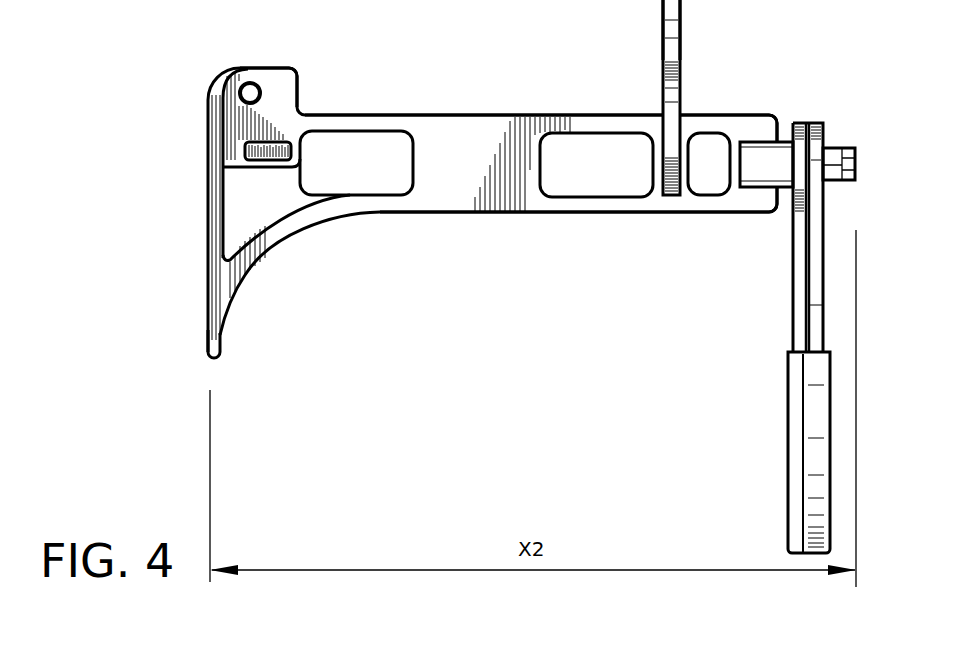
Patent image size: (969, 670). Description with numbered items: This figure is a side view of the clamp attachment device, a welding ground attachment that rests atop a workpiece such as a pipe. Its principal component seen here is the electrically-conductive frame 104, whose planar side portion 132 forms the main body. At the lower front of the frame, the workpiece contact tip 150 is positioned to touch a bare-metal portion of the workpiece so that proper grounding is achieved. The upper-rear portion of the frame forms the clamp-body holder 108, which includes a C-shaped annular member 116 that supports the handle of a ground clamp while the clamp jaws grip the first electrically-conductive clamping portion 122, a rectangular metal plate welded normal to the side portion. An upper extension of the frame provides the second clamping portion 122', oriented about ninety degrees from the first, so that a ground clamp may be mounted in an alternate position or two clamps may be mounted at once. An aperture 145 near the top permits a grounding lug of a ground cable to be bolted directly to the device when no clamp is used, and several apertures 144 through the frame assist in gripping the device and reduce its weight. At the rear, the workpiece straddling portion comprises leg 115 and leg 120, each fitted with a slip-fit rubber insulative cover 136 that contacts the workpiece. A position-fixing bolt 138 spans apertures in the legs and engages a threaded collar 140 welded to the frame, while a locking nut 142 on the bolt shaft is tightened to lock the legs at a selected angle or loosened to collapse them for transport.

The electrically-conductive frame 104 is at (190, 108).
The clamp-body holder 108 is at (620, 20).
The leg 115 is at (813, 292).
The C-shaped annular member 116 is at (662, 108).
The leg 120 is at (793, 340).
The first electrically-conductive clamping portion 122 is at (205, 159).
The second clamping portion 122' is at (315, 80).
The side portion 132 is at (471, 175).
The insulative cover 136 is at (795, 490).
The position-fixing bolt 138 is at (850, 181).
The threaded collar 140 is at (766, 142).
The locking nut 142 is at (835, 147).
The apertures 144 is at (340, 167).
The aperture 145 is at (241, 104).
The workpiece contact tip 150 is at (208, 352).